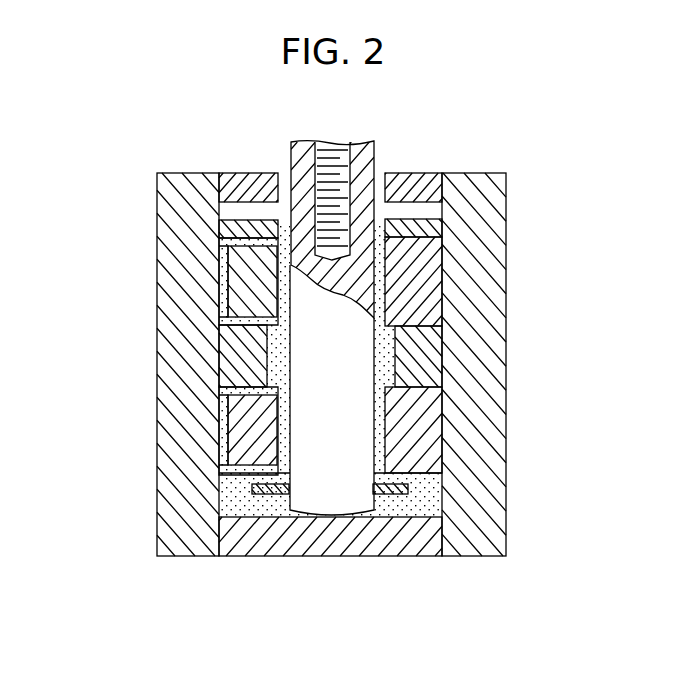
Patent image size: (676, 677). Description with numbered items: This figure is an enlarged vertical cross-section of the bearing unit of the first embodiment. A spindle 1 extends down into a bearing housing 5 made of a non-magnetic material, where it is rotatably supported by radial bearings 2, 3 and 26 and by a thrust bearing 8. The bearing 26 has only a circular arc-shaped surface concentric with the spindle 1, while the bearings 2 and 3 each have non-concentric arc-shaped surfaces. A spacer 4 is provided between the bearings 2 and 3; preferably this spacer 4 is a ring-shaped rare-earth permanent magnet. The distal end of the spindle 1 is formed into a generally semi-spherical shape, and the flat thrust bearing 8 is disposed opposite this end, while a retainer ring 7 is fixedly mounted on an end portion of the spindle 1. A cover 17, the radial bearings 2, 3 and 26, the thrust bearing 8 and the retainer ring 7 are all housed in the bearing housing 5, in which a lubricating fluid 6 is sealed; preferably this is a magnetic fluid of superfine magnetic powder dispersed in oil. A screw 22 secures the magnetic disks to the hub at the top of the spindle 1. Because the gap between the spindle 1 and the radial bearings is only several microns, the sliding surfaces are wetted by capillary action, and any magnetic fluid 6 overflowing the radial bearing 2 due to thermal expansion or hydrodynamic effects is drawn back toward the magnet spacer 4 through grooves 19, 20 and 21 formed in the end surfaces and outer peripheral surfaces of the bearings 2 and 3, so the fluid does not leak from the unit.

The spindle 1 is at (328, 503).
The radial bearing 2 is at (435, 262).
The radial bearing 3 is at (440, 420).
The spacer 4 is at (438, 352).
The bearing housing 5 is at (506, 207).
The lubricating fluid 6 is at (433, 502).
The retainer ring 7 is at (268, 494).
The thrust bearing 8 is at (393, 532).
The cover 17 is at (412, 180).
The groove 19 is at (245, 238).
The groove 20 is at (225, 270).
The groove 21 is at (243, 332).
The screw 22 is at (343, 167).
The radial bearing 26 is at (246, 237).